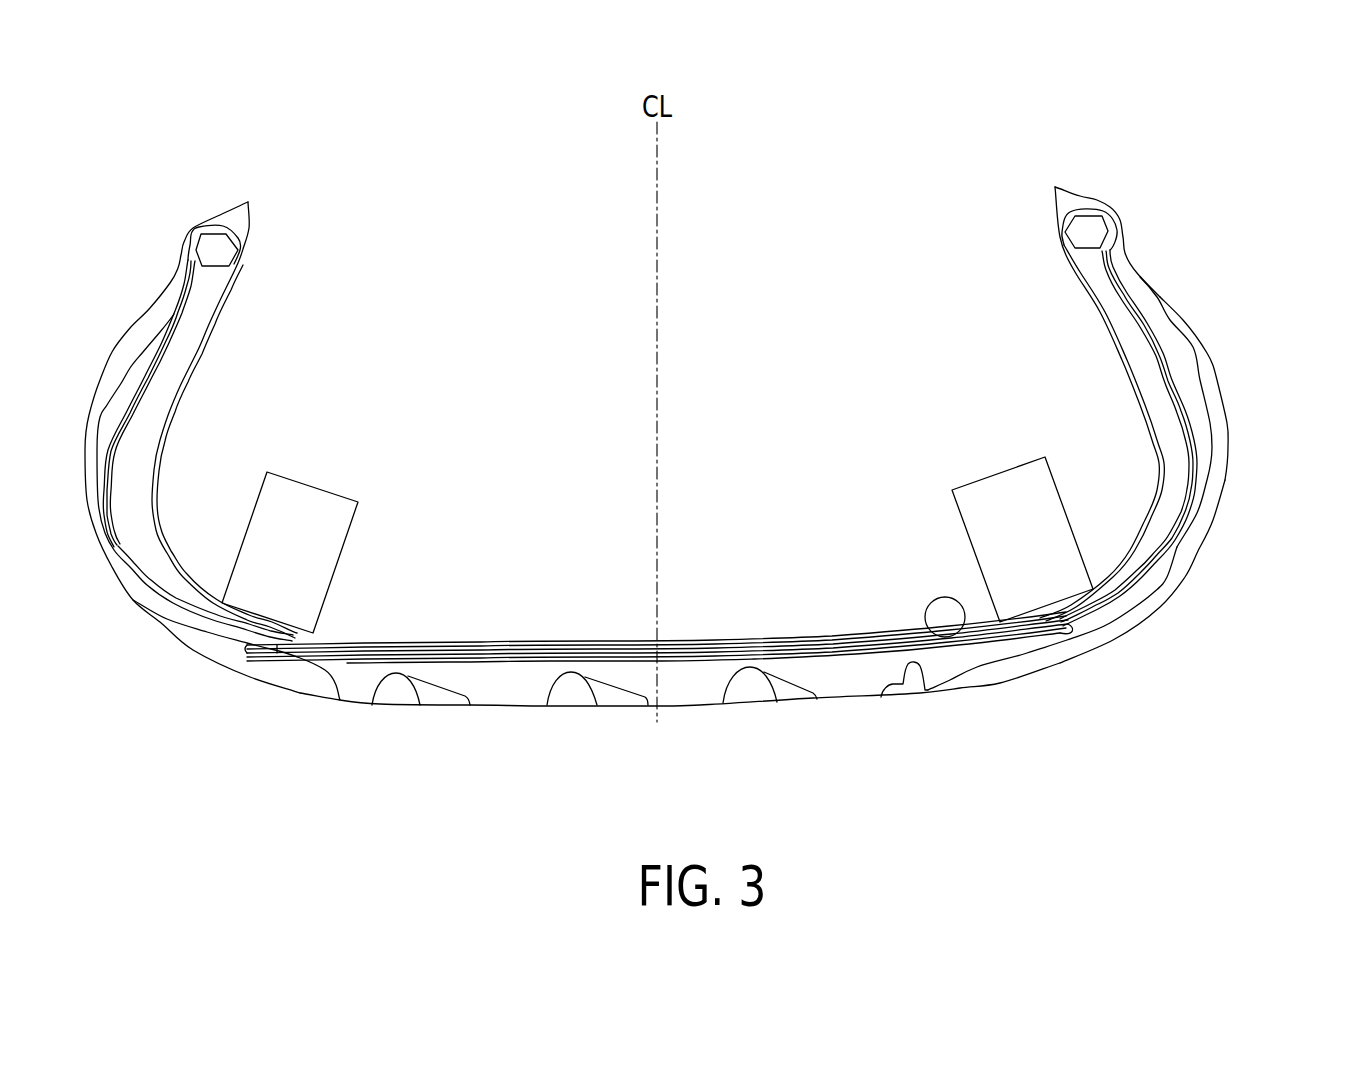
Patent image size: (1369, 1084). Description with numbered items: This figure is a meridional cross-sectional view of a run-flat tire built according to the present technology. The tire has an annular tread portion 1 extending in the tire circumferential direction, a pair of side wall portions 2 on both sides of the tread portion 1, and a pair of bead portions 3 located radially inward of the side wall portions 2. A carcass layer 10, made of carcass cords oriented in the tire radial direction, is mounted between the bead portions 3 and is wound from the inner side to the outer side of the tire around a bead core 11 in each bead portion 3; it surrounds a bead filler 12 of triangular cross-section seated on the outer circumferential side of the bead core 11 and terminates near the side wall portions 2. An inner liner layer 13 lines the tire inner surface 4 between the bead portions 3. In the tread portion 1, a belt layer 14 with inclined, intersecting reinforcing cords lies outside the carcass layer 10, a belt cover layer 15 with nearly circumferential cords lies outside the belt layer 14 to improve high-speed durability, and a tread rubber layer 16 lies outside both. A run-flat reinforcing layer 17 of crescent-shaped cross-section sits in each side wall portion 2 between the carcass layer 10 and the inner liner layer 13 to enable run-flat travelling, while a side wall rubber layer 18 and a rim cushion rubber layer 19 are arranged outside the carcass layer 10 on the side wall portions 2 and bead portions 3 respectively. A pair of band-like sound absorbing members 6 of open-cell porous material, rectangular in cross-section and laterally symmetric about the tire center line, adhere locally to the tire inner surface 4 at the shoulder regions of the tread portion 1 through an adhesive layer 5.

The tread portion 1 is at (700, 716).
The side wall portions 2 is at (1242, 519).
The bead portions 3 is at (1140, 237).
The tire inner surface 4 is at (937, 643).
The adhesive layer 5 is at (1060, 640).
The band-like sound absorbing member 6 is at (1003, 503).
The carcass layer 10 is at (1177, 557).
The bead core 11 is at (1092, 231).
The bead filler 12 is at (1107, 280).
The inner liner layer 13 is at (1158, 453).
The belt layer 14 is at (727, 637).
The belt cover layer 15 is at (1040, 643).
The tread rubber layer 16 is at (1127, 620).
The run-flat reinforcing layer 17 is at (1163, 407).
The side wall rubber layer 18 is at (1220, 460).
The rim cushion rubber layer 19 is at (1173, 323).